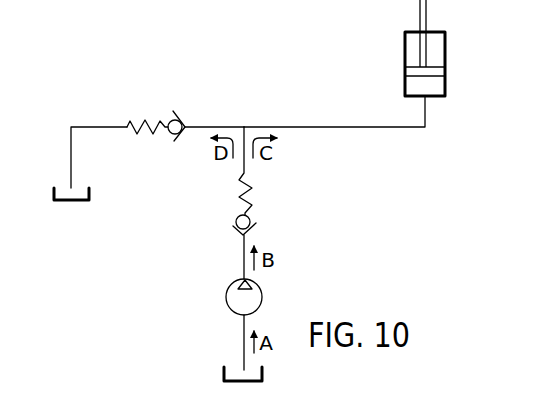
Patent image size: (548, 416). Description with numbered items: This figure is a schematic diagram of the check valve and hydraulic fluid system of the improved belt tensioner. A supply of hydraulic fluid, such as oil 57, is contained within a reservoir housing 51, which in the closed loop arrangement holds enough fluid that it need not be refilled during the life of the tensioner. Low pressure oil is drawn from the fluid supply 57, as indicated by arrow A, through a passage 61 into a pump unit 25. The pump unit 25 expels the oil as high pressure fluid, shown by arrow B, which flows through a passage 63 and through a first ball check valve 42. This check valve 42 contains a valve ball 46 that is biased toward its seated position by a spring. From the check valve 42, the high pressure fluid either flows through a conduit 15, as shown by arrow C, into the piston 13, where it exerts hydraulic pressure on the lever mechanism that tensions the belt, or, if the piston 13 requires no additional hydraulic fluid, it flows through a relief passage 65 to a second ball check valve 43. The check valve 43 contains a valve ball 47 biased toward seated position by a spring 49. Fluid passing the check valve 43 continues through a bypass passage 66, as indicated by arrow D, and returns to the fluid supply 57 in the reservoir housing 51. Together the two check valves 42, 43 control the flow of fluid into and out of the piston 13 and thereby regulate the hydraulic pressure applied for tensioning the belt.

The piston 13 is at (449, 49).
The conduit 15 is at (357, 128).
The pump unit 25 is at (262, 290).
The ball check valve 42 is at (252, 200).
The ball check valve 43 is at (160, 129).
The valve ball 46 is at (253, 219).
The valve ball 47 is at (177, 136).
The spring 49 is at (143, 136).
The reservoir housing 51 is at (65, 203).
The oil 57 is at (62, 192).
The passage 61 is at (243, 332).
The passage 63 is at (243, 252).
The relief passage 65 is at (223, 126).
The bypass passage 66 is at (88, 126).